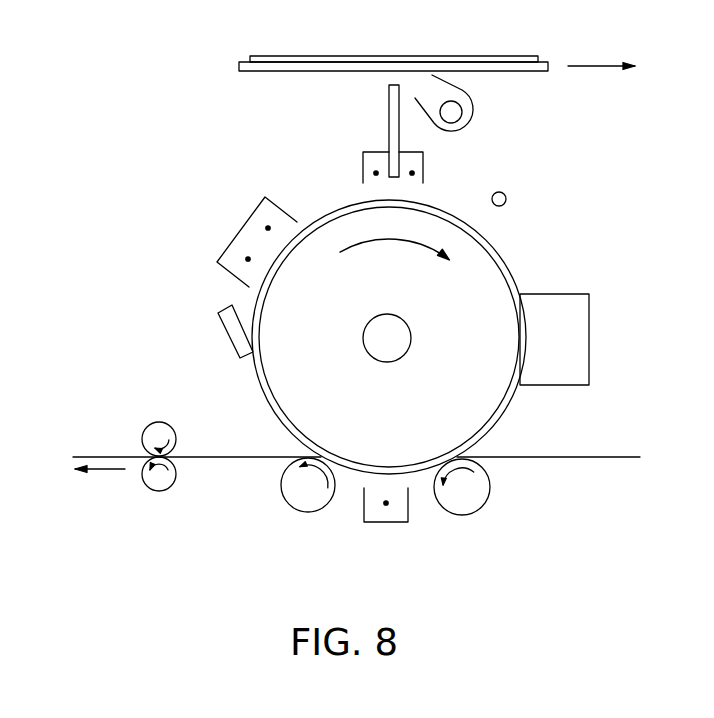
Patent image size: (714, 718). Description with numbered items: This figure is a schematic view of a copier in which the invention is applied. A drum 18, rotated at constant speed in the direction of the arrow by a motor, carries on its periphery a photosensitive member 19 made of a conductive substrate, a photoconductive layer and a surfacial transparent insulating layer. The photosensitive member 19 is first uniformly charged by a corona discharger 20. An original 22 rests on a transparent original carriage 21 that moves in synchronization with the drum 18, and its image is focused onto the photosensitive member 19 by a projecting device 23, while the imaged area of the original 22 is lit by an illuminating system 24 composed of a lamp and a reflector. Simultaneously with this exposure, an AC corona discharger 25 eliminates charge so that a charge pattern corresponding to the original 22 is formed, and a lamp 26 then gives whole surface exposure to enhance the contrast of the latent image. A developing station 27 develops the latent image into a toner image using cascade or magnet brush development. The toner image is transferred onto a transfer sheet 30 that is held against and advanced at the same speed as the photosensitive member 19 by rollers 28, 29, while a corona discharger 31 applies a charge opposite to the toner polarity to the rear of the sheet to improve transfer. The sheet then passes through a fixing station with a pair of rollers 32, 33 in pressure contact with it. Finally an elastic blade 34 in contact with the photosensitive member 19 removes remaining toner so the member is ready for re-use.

The drum 18 is at (278, 376).
The photosensitive member 19 is at (283, 428).
The corona discharger 20 is at (246, 224).
The transparent original carriage 21 is at (532, 72).
The original 22 is at (512, 57).
The projecting device 23 is at (389, 105).
The illuminating system 24 is at (477, 112).
The AC corona discharger 25 is at (363, 162).
The lamp 26 is at (506, 192).
The developing station 27 is at (580, 294).
The roller 28 is at (479, 506).
The roller 29 is at (306, 511).
The copy paper 30 is at (582, 458).
The corona discharger 31 is at (383, 522).
The roller 32 is at (158, 490).
The roller 33 is at (156, 423).
The elastic blade 34 is at (224, 320).